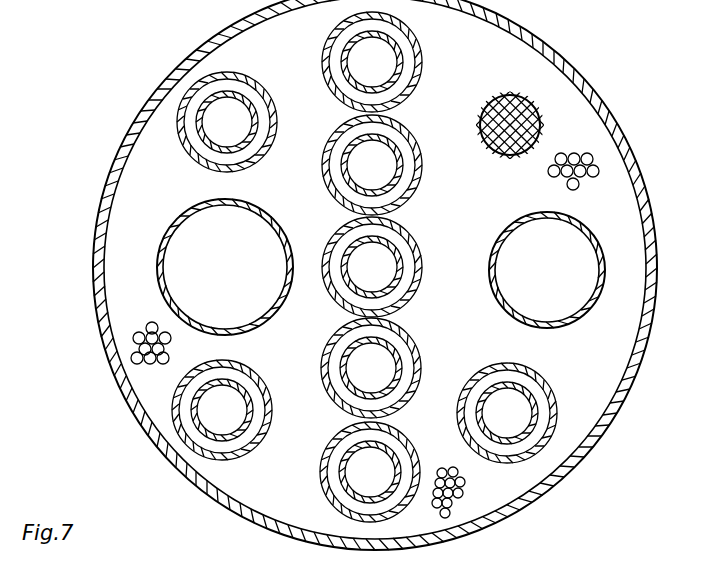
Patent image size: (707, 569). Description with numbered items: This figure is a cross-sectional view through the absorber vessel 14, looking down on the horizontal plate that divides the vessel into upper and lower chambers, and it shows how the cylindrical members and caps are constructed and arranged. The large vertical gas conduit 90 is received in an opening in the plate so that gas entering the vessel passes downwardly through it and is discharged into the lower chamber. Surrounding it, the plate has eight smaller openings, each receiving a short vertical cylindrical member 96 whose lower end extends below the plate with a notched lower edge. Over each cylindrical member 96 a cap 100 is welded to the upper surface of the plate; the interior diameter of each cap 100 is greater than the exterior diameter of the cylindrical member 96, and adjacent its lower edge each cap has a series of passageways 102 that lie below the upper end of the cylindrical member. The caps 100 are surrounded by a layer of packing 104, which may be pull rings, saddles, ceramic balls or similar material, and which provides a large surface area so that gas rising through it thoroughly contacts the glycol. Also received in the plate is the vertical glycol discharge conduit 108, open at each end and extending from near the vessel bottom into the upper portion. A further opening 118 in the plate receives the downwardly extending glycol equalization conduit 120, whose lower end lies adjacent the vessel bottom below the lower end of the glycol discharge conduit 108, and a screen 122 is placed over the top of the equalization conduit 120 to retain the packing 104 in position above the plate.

The absorber vessel 14 is at (592, 437).
The vertical gas conduit 90 is at (175, 223).
The cylindrical member 96 is at (343, 78).
The cap 100 is at (250, 368).
The passageway 102 is at (540, 383).
The packing 104 is at (457, 522).
The glycol discharge conduit 108 is at (489, 262).
The opening 118 is at (483, 126).
The glycol equalization conduit 120 is at (487, 140).
The screen 122 is at (538, 131).